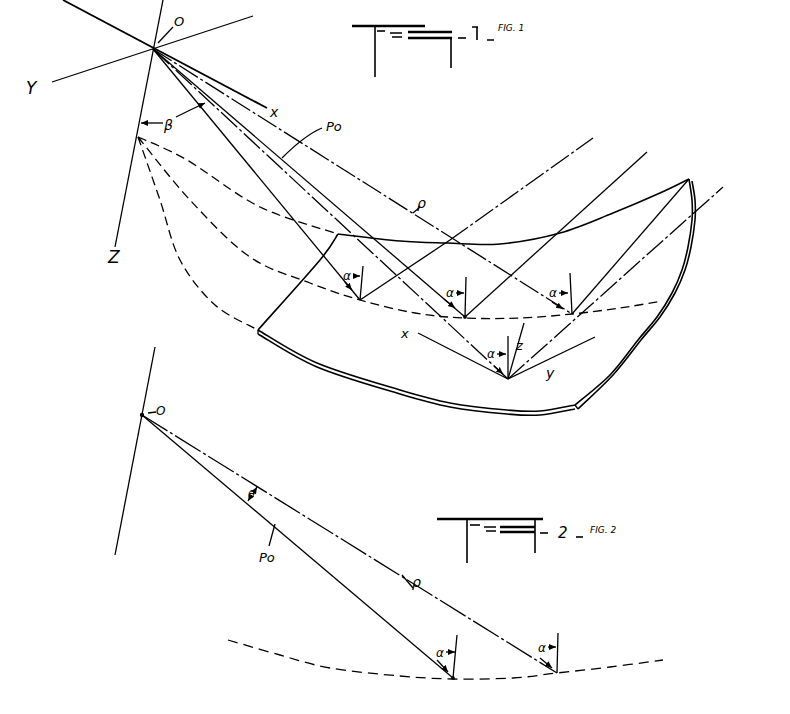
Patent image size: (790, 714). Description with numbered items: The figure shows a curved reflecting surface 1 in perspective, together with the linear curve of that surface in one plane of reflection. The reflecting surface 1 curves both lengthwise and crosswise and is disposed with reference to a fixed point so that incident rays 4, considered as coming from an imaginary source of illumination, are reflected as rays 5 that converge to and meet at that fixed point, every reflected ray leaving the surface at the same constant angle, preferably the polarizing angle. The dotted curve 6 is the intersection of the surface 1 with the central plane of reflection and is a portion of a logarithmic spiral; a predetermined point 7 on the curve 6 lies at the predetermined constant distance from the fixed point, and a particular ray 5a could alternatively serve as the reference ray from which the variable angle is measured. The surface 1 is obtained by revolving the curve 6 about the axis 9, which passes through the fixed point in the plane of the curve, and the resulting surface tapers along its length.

In FIG. 1, the reflecting surface 1 is at (505, 398).
In FIG. 1, the incident rays 4 is at (593, 138).
In FIG. 1, the reflected rays 5 is at (268, 188).
In FIG. 2, the ray 5a is at (495, 633).
In FIG. 1, the curve 6 is at (640, 303).
In FIG. 2, the curve 6 is at (445, 659).
In FIG. 1, the predetermined point 7 is at (482, 309).
In FIG. 2, the predetermined point 7 is at (453, 678).
In FIG. 1, the axis 9 is at (140, 115).
In FIG. 2, the axis 9 is at (123, 513).